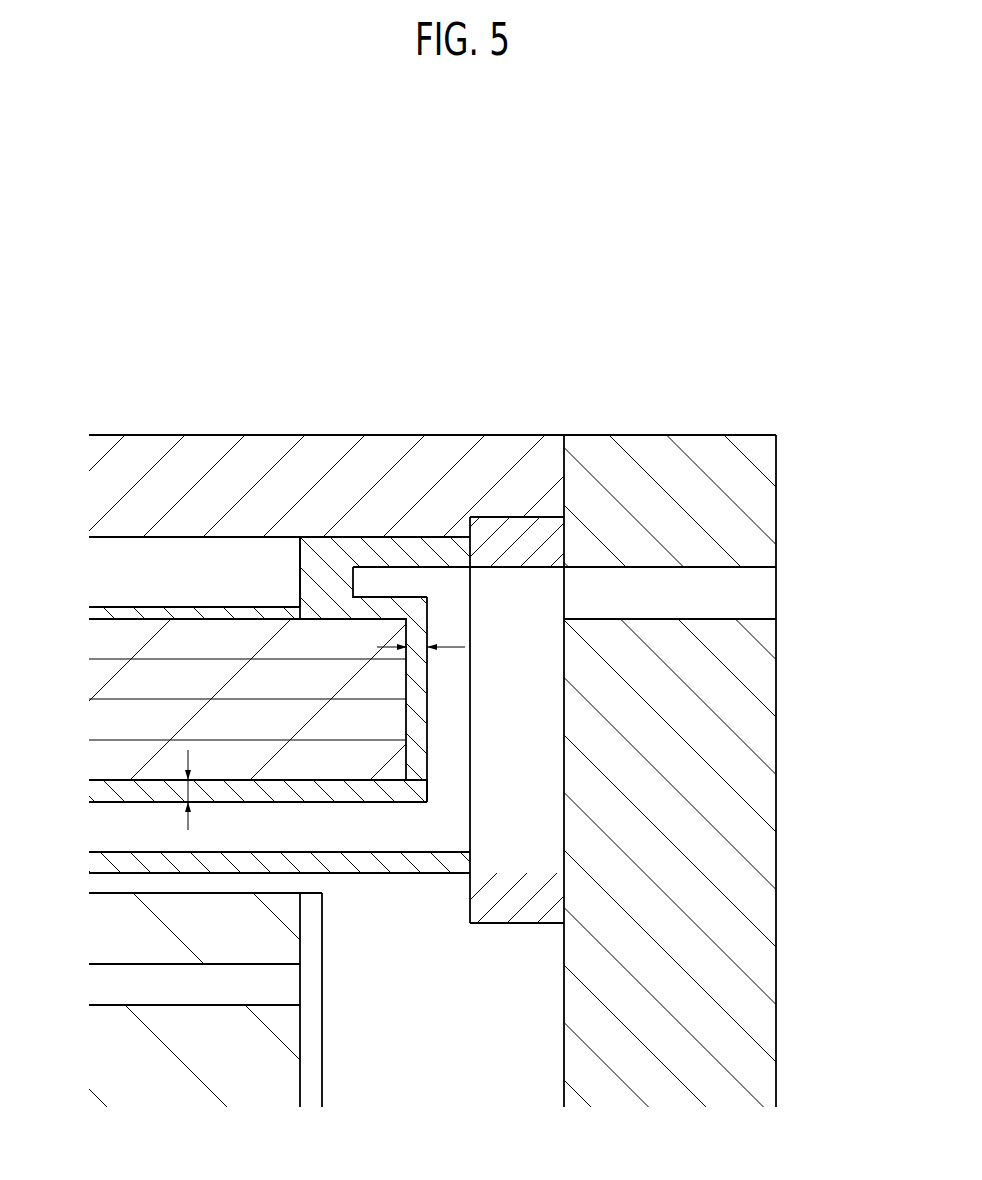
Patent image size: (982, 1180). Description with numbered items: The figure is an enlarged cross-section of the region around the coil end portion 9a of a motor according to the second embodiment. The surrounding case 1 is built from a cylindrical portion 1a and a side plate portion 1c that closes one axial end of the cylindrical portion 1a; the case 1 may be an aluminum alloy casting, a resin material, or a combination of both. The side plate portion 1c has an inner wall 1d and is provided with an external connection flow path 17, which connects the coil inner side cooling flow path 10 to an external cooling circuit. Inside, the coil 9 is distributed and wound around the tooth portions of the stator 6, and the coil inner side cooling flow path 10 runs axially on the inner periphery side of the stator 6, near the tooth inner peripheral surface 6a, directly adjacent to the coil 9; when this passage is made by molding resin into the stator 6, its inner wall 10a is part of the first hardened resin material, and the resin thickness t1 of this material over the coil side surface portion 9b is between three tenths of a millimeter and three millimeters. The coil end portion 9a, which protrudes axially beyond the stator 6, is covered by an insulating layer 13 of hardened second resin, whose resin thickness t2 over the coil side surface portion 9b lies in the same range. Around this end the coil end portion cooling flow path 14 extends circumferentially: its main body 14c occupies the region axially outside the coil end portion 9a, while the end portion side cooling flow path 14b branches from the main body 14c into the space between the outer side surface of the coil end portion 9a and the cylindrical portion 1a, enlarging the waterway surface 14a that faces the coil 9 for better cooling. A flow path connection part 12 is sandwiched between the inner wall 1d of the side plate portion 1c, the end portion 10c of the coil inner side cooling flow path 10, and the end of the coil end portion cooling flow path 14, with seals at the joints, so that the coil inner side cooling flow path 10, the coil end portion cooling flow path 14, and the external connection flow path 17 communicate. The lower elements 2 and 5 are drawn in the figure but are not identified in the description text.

The case 1 is at (462, 751).
The cylindrical portion 1a is at (101, 436).
The side plate portion 1c is at (776, 1017).
The inner wall 1d is at (560, 1015).
The base plate 2 is at (266, 1000).
The groove 5 is at (280, 983).
The stator 6 is at (178, 570).
The tooth inner peripheral surface 6a is at (113, 625).
The coil 9 is at (218, 673).
The coil end portion 9a is at (332, 678).
The coil side surface portion 9b is at (120, 793).
The coil inner side cooling flow path 10 is at (455, 894).
The inner wall 10a is at (108, 862).
The end portion 10c is at (472, 863).
The flow path connection part 12 is at (517, 517).
The insulating layer 13 is at (400, 553).
The coil end portion cooling flow path 14 is at (596, 608).
The waterway surface 14a is at (430, 747).
The end portion side cooling flow path 14b is at (413, 583).
The coil end portion cooling flow path main body 14c is at (453, 697).
The external connection flow path 17 is at (680, 597).
The resin thickness t1 is at (202, 797).
The resin thickness t2 is at (421, 630).